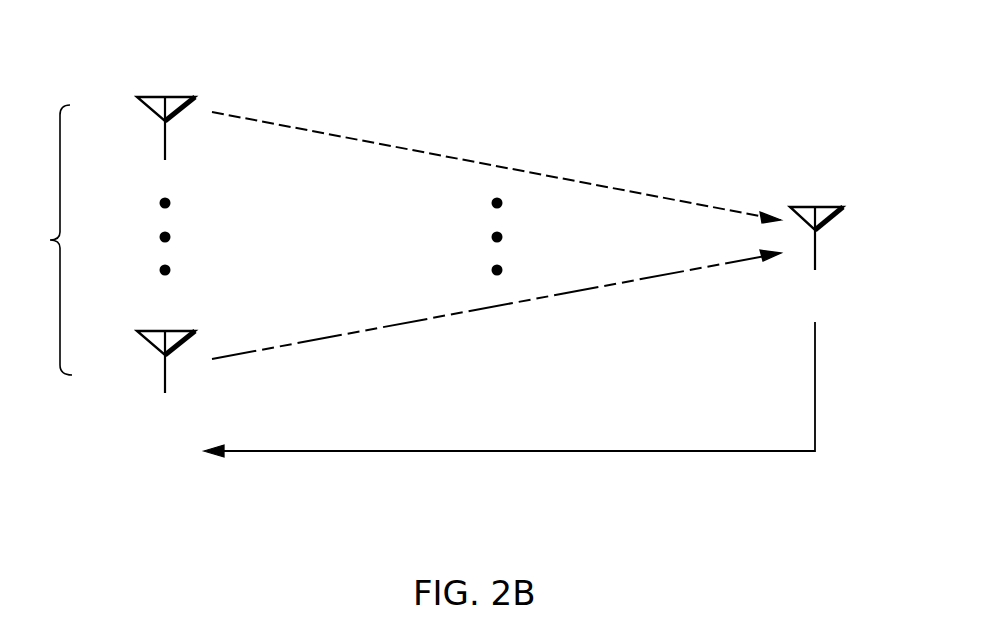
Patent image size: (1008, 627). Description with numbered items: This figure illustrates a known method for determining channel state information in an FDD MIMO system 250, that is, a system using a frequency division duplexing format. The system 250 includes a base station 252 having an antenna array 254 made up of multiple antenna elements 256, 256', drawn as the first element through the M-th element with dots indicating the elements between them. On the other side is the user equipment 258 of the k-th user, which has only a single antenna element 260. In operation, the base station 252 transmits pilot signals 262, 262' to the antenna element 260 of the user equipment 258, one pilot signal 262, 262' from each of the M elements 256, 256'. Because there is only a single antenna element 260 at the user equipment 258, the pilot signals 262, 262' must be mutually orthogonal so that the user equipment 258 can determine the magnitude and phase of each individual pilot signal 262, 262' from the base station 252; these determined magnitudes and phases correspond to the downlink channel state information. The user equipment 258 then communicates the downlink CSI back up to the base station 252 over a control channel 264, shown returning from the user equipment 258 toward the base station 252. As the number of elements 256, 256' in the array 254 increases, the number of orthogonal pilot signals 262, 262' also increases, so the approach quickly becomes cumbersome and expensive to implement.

The FDD MIMO system 250 is at (153, 42).
The base station 252 is at (165, 449).
The antenna array 254 is at (39, 240).
The antenna element 256 is at (141, 128).
The antenna element 256' is at (137, 362).
The user equipment 258 is at (842, 314).
The antenna element 260 is at (808, 204).
The pilot signal 262 is at (496, 167).
The pilot signal 262' is at (496, 304).
The control channel 264 is at (510, 453).